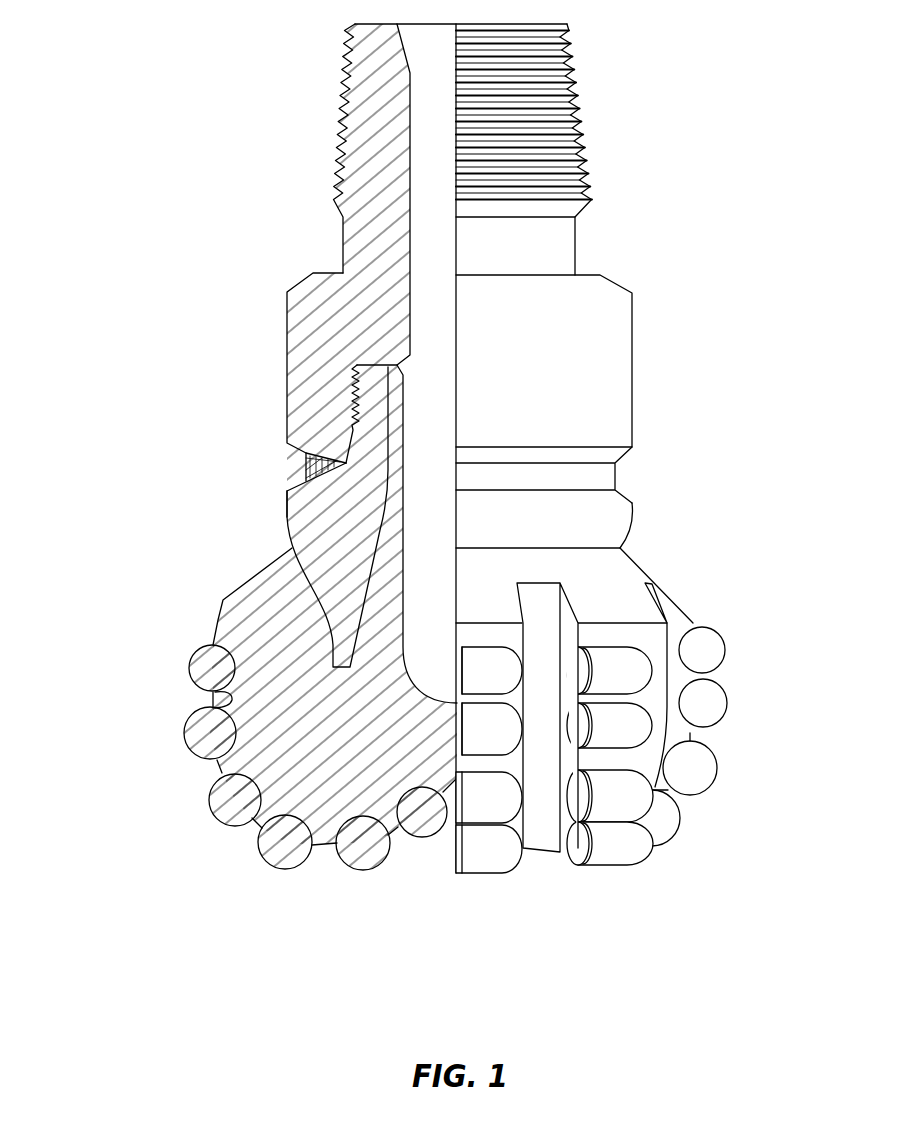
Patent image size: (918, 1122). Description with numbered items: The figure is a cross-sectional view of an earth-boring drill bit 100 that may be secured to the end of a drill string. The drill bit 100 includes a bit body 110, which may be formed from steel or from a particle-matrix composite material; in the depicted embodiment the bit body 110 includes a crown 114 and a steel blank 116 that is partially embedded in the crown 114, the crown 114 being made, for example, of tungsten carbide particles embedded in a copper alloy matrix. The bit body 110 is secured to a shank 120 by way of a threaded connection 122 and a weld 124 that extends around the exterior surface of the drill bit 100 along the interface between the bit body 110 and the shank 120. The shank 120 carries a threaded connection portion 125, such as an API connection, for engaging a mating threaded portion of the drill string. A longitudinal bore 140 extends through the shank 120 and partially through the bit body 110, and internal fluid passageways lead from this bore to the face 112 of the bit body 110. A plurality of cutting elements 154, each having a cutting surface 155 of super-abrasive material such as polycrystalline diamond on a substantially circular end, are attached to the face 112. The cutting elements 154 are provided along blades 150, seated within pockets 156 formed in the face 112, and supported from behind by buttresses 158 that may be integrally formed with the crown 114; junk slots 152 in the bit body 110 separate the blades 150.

The earth-boring drill bit 100 is at (453, 495).
The bit body 110 is at (453, 714).
The face 112 is at (217, 763).
The crown 114 is at (453, 743).
The steel blank 116 is at (305, 522).
The shank 120 is at (306, 360).
The threaded connection 122 is at (338, 400).
The weld 124 is at (305, 462).
The threaded connection portion 125 is at (330, 116).
The longitudinal bore 140 is at (433, 285).
The blades 150 is at (648, 773).
The junk slots 152 is at (538, 858).
The cutting elements 154 is at (460, 806).
The cutting surface 155 is at (575, 850).
The pockets 156 is at (212, 693).
The buttresses 158 is at (643, 850).